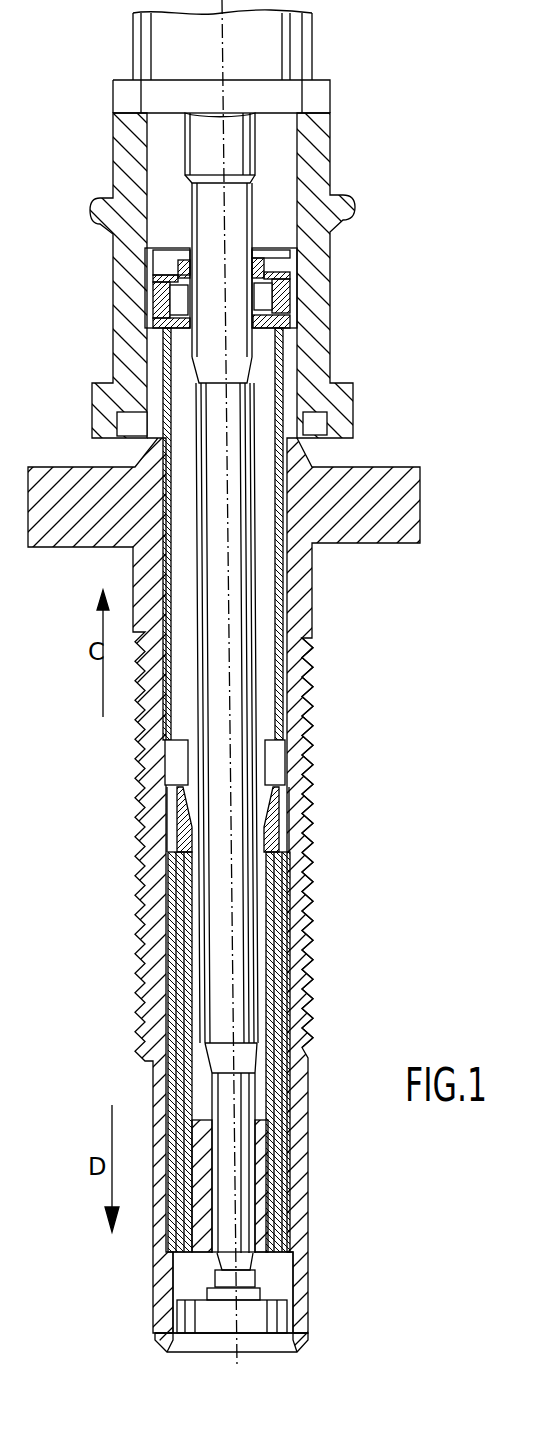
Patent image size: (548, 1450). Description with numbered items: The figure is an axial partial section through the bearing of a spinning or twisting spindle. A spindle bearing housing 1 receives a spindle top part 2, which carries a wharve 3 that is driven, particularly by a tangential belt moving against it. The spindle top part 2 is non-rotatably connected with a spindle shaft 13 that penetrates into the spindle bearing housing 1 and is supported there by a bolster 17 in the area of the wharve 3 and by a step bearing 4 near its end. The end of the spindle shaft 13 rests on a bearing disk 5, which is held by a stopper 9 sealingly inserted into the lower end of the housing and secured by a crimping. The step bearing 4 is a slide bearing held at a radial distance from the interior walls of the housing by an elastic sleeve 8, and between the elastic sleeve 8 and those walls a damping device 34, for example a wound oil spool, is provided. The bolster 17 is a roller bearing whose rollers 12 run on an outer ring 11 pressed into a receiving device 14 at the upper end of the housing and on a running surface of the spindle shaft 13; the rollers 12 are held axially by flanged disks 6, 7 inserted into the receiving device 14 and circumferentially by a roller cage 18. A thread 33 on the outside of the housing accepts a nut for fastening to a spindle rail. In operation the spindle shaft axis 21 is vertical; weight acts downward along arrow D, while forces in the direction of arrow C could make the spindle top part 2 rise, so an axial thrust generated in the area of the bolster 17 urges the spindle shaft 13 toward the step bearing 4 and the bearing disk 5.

The spindle bearing housing 1 is at (295, 563).
The spindle top part 2 is at (298, 42).
The wharve 3 is at (328, 242).
The step bearing 4 is at (260, 1153).
The bearing disk 5 is at (240, 1284).
The flanged disk 6 is at (265, 272).
The flanged disk 7 is at (275, 320).
The elastic sleeve 8 is at (283, 603).
The stopper 9 is at (267, 1343).
The outer ring 11 is at (163, 297).
The rollers 12 is at (177, 303).
The spindle shaft 13 is at (233, 455).
The receiving device 14 is at (148, 268).
The bolster 17 is at (272, 265).
The roller cage 18 is at (177, 250).
The spindle shaft axis 21 is at (220, 40).
The thread 33 is at (310, 684).
The damping device 34 is at (290, 948).